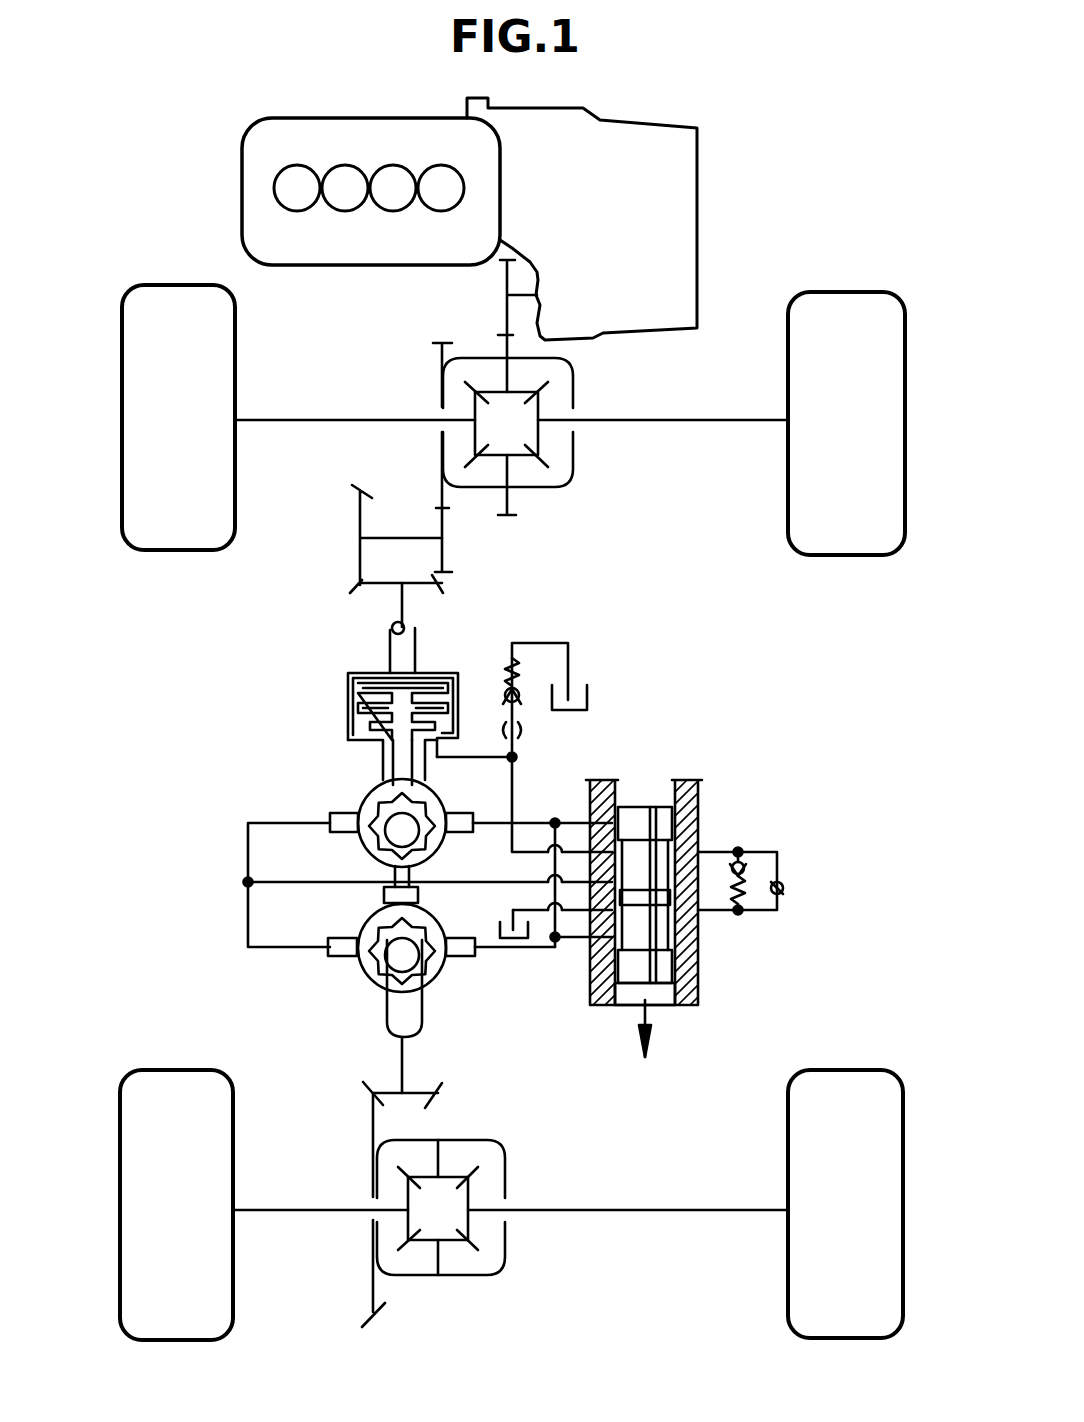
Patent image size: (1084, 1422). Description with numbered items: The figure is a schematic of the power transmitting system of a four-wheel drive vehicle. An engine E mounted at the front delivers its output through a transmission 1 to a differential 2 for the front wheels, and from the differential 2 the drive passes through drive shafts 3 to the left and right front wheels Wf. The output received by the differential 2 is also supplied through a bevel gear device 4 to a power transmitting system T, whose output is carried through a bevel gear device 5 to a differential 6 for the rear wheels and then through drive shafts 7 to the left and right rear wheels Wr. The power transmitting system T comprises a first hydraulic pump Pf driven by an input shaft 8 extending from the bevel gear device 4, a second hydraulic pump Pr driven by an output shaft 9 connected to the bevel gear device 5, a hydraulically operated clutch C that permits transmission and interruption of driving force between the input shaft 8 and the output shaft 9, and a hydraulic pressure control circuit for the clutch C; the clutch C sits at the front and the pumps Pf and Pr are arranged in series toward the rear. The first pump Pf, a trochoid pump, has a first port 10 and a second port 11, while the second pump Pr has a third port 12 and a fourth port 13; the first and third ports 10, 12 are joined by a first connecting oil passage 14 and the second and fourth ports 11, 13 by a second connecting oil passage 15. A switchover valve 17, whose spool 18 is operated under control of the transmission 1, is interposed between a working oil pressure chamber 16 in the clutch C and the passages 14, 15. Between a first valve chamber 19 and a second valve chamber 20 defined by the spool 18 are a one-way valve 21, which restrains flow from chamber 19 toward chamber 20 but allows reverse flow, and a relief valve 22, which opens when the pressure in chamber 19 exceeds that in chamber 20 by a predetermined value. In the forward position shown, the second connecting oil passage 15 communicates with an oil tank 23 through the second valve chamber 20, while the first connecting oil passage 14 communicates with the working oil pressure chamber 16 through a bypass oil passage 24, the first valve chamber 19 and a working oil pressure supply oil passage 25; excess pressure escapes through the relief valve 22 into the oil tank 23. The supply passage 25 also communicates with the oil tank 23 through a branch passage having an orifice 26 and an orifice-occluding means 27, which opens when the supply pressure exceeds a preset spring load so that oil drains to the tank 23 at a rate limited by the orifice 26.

The transmission 1 is at (697, 208).
The differential 2 is at (573, 372).
The drive shafts 3 is at (327, 418).
The bevel gear device 4 is at (348, 535).
The bevel gear device 5 is at (442, 1096).
The differential 6 is at (505, 1164).
The drive shafts 7 is at (320, 1208).
The input shaft 8 is at (402, 607).
The output shaft 9 is at (403, 1058).
The first port 10 is at (355, 814).
The second port 11 is at (458, 814).
The third port 12 is at (350, 957).
The fourth port 13 is at (460, 956).
The first connecting oil passage 14 is at (248, 856).
The second connecting oil passage 15 is at (555, 868).
The working oil pressure chamber 16 is at (440, 742).
The switchover valve 17 is at (737, 803).
The spool 18 is at (652, 814).
The first valve chamber 19 is at (670, 850).
The second valve chamber 20 is at (678, 940).
The one-way valve 21 is at (784, 886).
The relief valve 22 is at (748, 882).
The oil tank 23 is at (590, 690).
The bypass oil passage 24 is at (303, 884).
The working oil pressure supply oil passage 25 is at (514, 788).
The orifice 26 is at (518, 731).
The orifice-occluding means 27 is at (505, 690).
The engine E is at (232, 179).
The hydraulically operated clutch C is at (428, 654).
The power transmitting system T is at (272, 773).
The first hydraulic pump Pf is at (357, 800).
The second hydraulic pump Pr is at (368, 983).
The front wheels Wf is at (180, 292).
The rear wheels Wr is at (190, 1074).